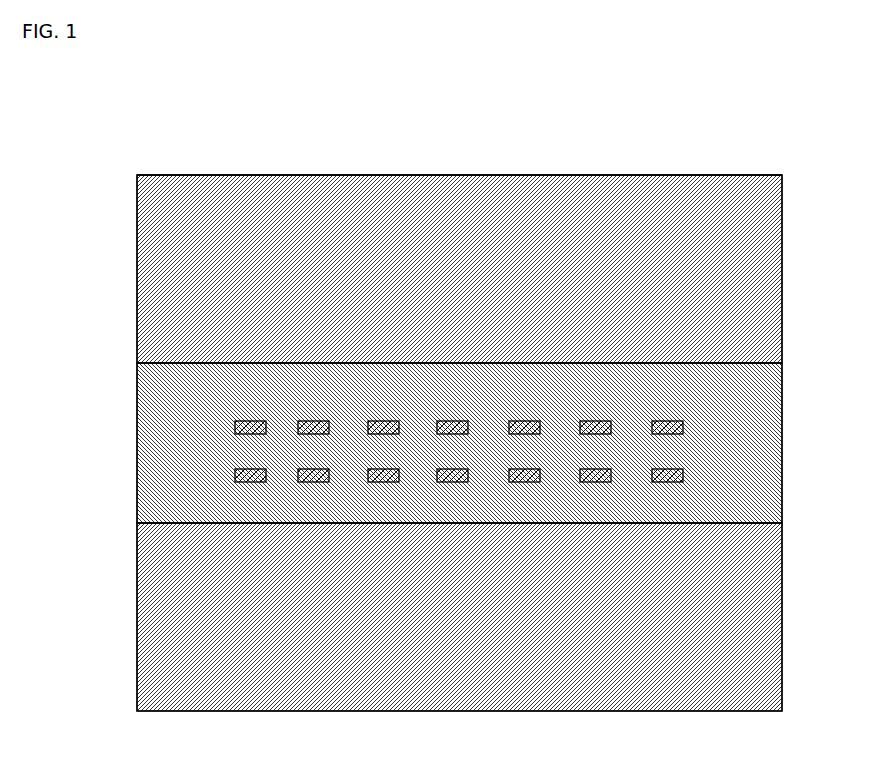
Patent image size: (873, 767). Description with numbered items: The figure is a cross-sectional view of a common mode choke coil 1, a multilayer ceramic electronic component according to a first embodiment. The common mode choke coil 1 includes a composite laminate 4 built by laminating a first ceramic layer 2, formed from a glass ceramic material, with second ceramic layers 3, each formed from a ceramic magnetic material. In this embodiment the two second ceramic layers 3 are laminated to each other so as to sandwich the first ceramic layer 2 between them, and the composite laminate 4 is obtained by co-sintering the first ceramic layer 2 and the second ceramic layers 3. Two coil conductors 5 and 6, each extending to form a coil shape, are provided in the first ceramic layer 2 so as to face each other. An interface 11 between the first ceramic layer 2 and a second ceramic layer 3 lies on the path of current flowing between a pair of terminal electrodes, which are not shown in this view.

The common mode choke coil 1 is at (284, 108).
The first ceramic layer 2 is at (165, 435).
The second ceramic layers 3 is at (166, 259).
The composite laminate 4 is at (681, 170).
The first coil conductor 5 is at (683, 427).
The second coil conductor 6 is at (683, 475).
The interface 11 is at (698, 363).